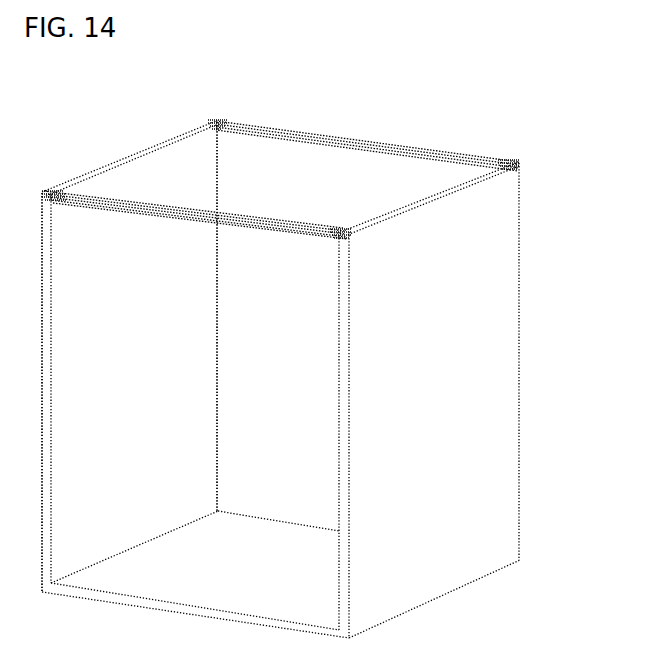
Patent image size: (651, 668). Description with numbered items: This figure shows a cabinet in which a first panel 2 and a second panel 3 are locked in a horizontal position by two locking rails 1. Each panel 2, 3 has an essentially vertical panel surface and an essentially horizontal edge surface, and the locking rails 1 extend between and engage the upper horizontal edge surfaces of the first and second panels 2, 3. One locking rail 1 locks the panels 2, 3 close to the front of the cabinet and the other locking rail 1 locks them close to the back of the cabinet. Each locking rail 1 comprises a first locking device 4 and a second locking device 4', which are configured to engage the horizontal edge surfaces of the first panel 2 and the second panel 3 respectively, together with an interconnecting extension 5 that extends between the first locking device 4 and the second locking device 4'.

The locking rail 1 is at (232, 205).
The first panel 2 is at (176, 176).
The second panel 3 is at (485, 330).
The first locking device 4 is at (135, 195).
The second locking device 4' is at (446, 218).
The interconnecting extension 5 is at (193, 218).